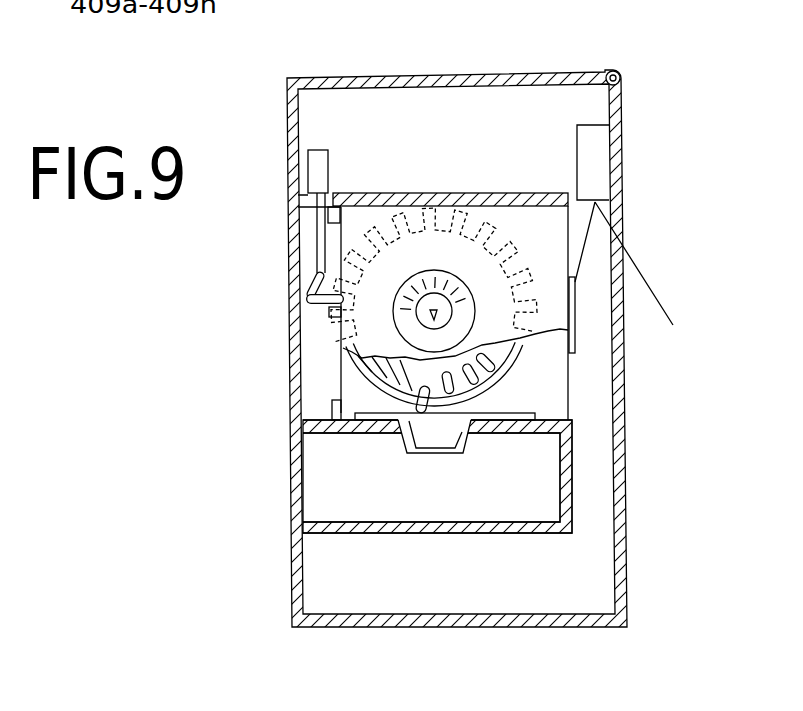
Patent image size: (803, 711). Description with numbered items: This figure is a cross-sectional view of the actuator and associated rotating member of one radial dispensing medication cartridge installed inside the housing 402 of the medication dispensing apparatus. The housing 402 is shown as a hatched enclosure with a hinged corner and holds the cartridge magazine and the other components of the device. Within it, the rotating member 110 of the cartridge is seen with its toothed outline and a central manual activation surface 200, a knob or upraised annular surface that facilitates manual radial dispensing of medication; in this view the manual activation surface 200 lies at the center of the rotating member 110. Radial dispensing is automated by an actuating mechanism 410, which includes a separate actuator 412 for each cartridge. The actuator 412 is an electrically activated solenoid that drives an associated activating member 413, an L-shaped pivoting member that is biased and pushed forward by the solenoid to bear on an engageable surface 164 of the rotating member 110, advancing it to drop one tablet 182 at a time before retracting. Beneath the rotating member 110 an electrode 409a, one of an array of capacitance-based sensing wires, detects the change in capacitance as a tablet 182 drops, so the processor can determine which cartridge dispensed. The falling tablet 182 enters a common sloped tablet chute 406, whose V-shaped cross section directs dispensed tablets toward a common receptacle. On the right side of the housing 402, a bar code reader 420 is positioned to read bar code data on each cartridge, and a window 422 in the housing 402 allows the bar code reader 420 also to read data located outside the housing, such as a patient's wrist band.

The housing 402 is at (445, 72).
The actuator 412 is at (315, 178).
The rotating member 110 is at (503, 228).
The bar code reader 420 is at (587, 145).
The window 422 is at (612, 163).
The manual activation surface 200 is at (462, 308).
The actuating mechanism 410 is at (289, 263).
The activating member 413 is at (308, 298).
The engageable surface 164 is at (337, 316).
The electrode 409a is at (336, 430).
The tablet 182 is at (424, 392).
The sloped tablet chute 406 is at (533, 508).